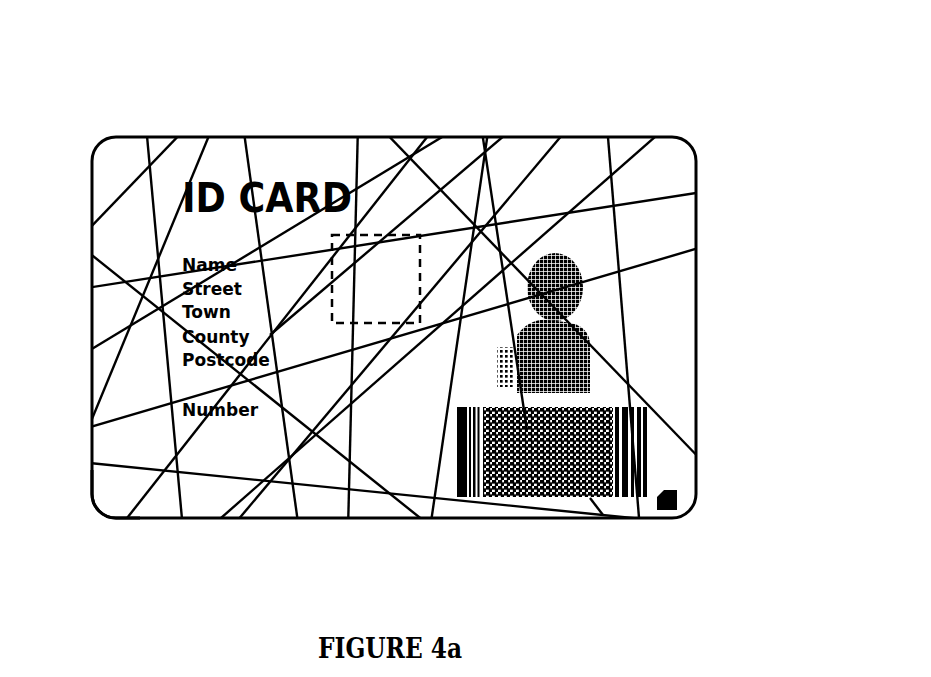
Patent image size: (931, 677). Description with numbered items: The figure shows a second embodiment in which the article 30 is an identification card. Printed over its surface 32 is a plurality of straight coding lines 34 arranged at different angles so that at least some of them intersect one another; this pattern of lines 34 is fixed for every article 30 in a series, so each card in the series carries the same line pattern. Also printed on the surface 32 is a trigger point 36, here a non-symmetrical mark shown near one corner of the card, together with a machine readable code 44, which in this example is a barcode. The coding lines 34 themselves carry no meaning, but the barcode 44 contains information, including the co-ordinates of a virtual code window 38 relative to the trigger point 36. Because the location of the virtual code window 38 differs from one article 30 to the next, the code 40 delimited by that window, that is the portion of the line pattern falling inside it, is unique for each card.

The article 30 is at (716, 341).
The surface 32 is at (119, 486).
The straight lines 34 is at (525, 137).
The trigger point 36 is at (674, 493).
The virtual code window 38 is at (383, 231).
The code 40 is at (353, 270).
The machine readable code 44 is at (524, 497).